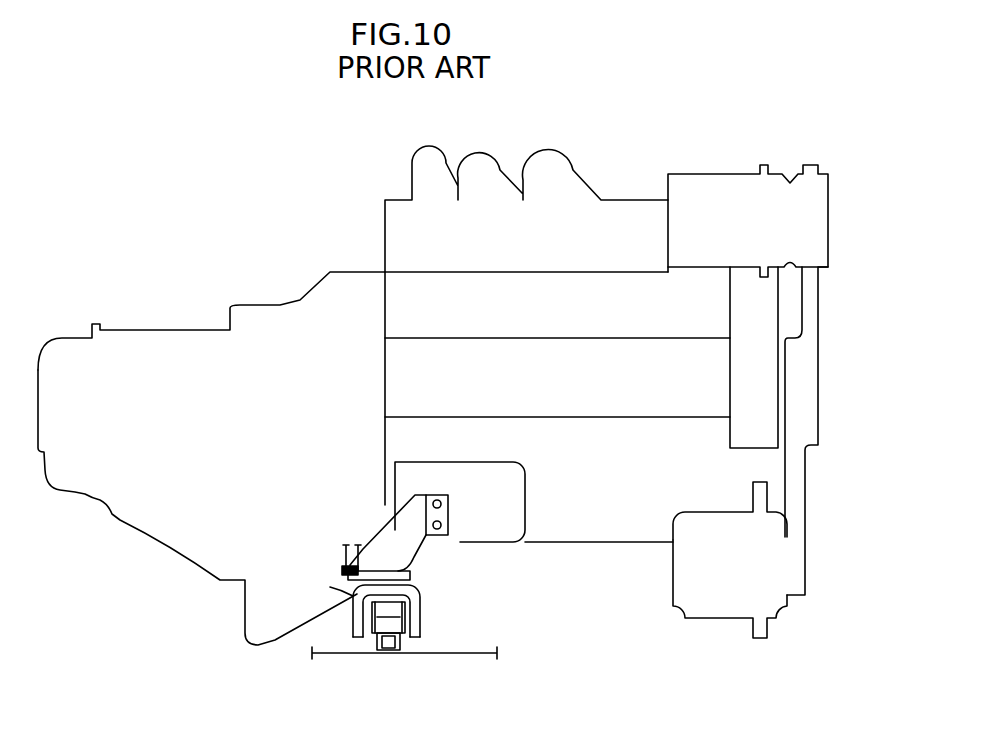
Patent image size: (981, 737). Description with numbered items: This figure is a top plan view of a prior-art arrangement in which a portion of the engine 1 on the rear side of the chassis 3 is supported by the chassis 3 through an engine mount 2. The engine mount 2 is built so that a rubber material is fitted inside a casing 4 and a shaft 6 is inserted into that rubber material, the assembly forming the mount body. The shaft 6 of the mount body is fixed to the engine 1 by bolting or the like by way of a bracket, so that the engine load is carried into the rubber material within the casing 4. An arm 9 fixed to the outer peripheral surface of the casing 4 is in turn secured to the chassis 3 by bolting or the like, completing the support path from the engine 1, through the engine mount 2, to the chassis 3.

The engine 1 is at (597, 197).
The engine mount 2 is at (316, 633).
The chassis 3 is at (487, 652).
The casing 4 is at (420, 596).
The shaft 6 is at (400, 610).
The arm 9 is at (374, 646).